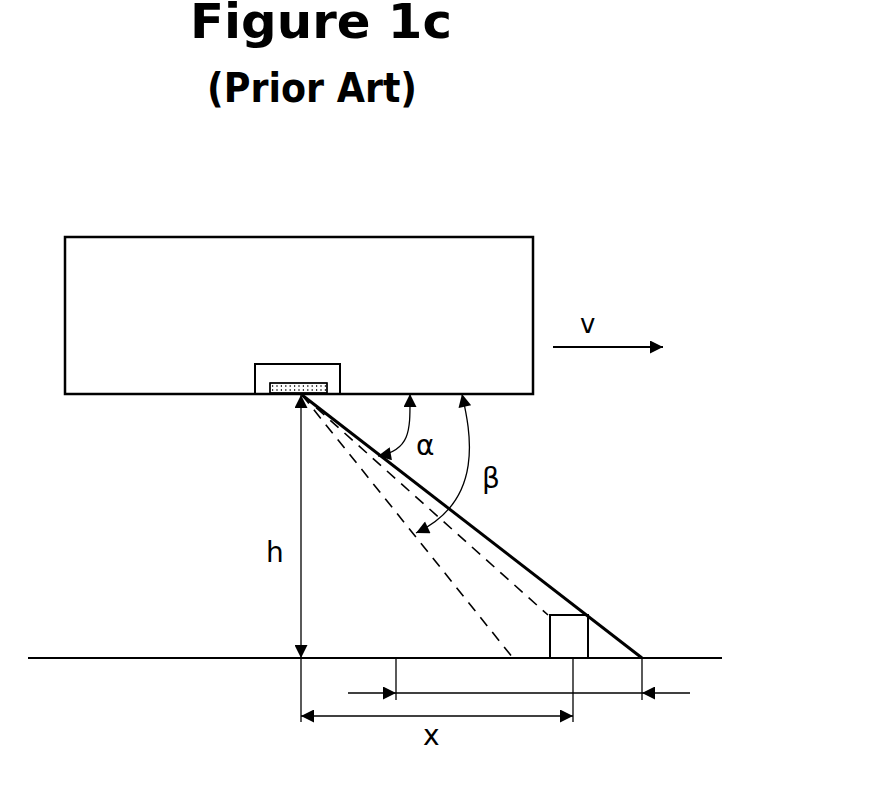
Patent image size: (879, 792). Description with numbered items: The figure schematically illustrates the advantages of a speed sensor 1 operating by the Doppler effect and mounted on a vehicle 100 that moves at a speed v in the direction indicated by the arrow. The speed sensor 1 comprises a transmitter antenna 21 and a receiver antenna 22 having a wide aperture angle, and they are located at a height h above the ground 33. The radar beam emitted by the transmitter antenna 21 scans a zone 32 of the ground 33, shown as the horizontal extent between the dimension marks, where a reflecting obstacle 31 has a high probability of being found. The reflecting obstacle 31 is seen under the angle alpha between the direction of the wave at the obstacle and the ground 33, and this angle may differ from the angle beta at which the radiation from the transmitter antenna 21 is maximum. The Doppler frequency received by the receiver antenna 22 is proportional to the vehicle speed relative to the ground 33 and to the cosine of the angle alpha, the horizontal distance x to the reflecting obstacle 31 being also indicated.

The speed sensor 1 is at (259, 362).
The vehicle 100 is at (110, 395).
The transmitter antenna 21 is at (284, 396).
The receiver antenna 22 is at (235, 449).
The reflecting obstacle 31 is at (595, 611).
The zone 32 is at (508, 688).
The ground 33 is at (148, 661).